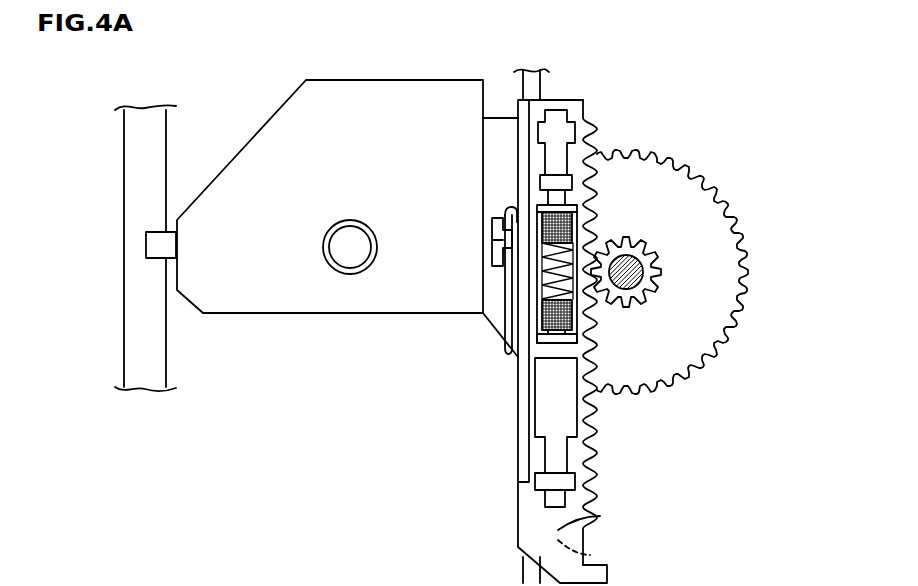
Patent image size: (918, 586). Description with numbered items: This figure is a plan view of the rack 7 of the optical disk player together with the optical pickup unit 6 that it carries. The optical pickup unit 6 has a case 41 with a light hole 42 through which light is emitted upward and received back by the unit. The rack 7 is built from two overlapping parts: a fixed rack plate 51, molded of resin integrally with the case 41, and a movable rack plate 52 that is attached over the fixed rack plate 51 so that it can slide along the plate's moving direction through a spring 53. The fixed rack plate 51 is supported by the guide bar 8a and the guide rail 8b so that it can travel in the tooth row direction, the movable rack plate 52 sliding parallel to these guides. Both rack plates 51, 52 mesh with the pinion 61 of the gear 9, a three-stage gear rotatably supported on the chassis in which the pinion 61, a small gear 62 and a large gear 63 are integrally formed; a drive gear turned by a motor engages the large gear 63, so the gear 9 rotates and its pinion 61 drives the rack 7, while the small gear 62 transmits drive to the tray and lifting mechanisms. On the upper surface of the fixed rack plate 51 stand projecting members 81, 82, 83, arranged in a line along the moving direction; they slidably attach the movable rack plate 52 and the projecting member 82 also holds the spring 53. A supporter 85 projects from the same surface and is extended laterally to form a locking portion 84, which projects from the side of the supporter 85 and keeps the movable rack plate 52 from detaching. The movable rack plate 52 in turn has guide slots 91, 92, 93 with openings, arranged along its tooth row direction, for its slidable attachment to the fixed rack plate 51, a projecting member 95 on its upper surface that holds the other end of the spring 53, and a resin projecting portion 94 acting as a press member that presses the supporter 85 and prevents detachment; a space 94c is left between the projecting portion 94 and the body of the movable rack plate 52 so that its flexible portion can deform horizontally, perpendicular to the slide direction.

The optical pickup unit 6 is at (308, 327).
The rack 7 is at (617, 341).
The guide bar 8a is at (530, 88).
The guide rail 8b is at (143, 195).
The gear 9 is at (712, 378).
The case 41 is at (290, 152).
The light hole 42 is at (350, 245).
The fixed rack plate 51 is at (590, 555).
The movable rack plate 52 is at (600, 516).
The spring 53 is at (550, 304).
The pinion 61 is at (688, 251).
The small gear 62 is at (667, 277).
The large gear 63 is at (693, 247).
The projecting member 81 is at (557, 482).
The projecting member 82 is at (553, 345).
The projecting member 83 is at (592, 176).
The locking portion 84 is at (504, 241).
The supporter 85 is at (493, 245).
The guide slot 91 is at (557, 455).
The guide slot 92 is at (562, 316).
The guide slot 93 is at (555, 157).
The projecting portion 94 is at (448, 199).
The space 94c is at (513, 208).
The projecting member 95 is at (556, 183).